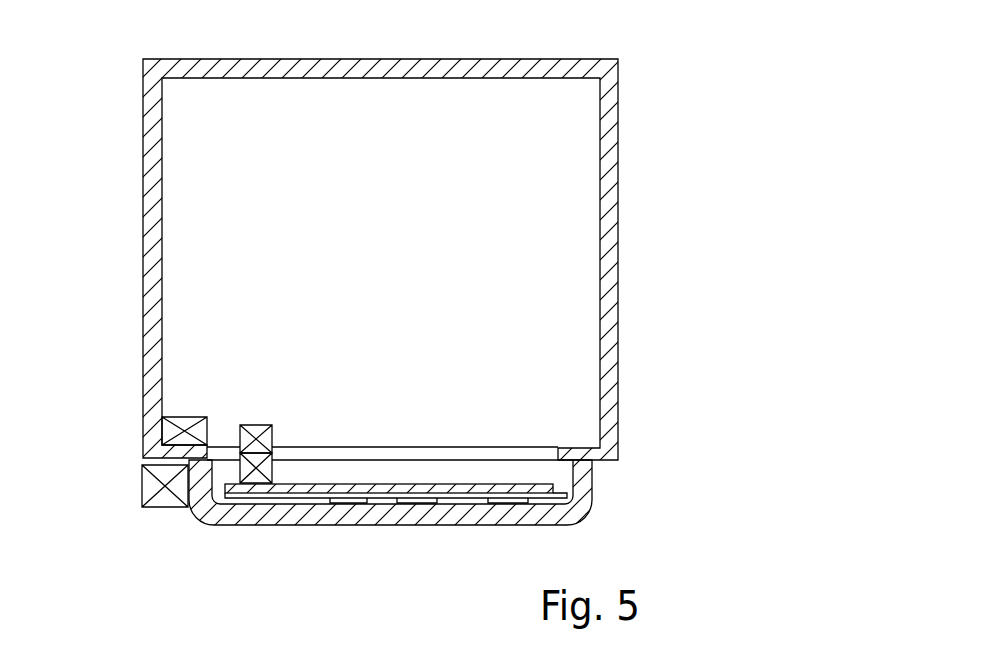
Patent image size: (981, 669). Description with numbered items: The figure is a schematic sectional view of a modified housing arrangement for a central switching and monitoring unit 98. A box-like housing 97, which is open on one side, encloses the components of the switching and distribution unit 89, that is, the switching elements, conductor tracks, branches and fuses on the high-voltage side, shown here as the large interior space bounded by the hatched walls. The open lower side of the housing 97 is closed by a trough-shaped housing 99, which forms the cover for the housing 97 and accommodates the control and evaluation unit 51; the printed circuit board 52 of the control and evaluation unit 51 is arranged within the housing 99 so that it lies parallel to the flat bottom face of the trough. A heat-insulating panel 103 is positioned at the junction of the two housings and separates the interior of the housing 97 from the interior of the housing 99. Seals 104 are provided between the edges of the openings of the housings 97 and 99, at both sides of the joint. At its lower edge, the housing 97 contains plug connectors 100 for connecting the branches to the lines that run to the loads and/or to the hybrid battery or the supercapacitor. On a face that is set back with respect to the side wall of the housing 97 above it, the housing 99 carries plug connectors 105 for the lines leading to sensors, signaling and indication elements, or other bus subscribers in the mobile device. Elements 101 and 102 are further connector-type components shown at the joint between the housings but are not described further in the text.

The housing 97 is at (547, 70).
The switching and monitoring unit 98 is at (130, 212).
The switching and distribution unit 89 is at (370, 259).
The housing 99 is at (258, 528).
The plug connectors 100 is at (185, 417).
The seal element 101 is at (256, 425).
The seal element 102 is at (273, 470).
The heat-insulating panel 103 is at (416, 452).
The seals 104 is at (162, 445).
The plug connectors 105 is at (150, 484).
The control and evaluation unit 51 is at (382, 498).
The printed circuit board 52 is at (469, 516).